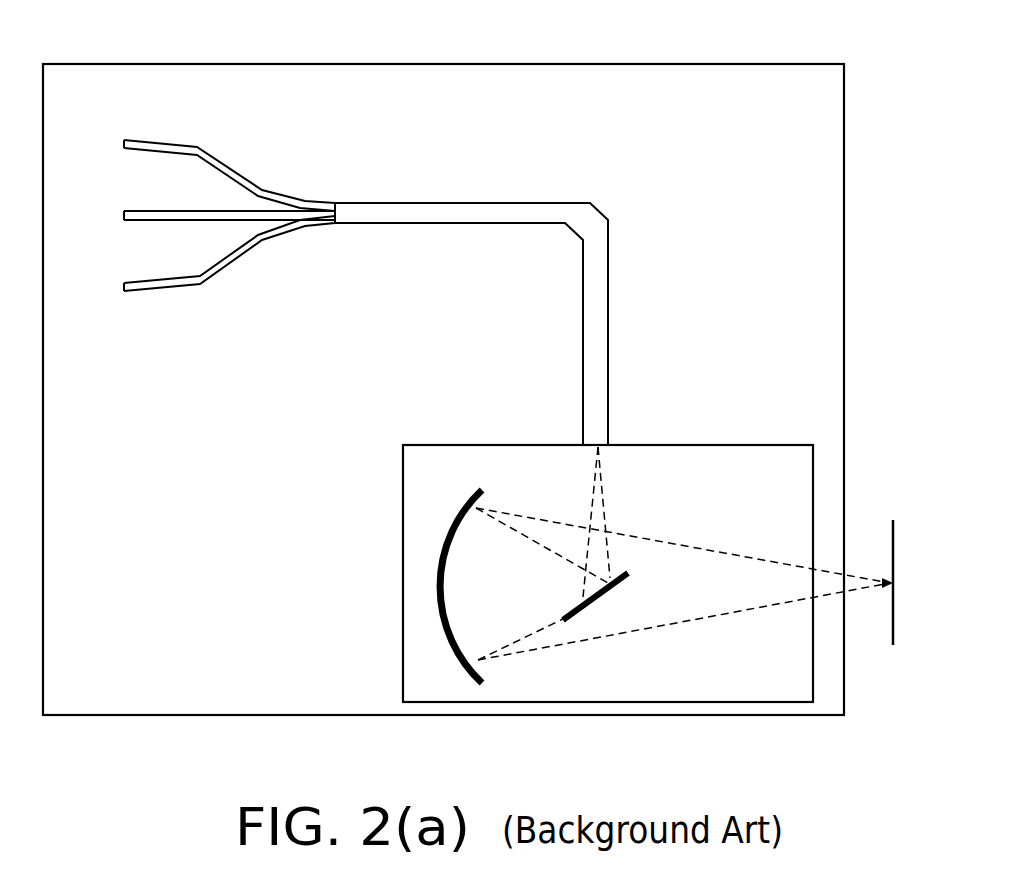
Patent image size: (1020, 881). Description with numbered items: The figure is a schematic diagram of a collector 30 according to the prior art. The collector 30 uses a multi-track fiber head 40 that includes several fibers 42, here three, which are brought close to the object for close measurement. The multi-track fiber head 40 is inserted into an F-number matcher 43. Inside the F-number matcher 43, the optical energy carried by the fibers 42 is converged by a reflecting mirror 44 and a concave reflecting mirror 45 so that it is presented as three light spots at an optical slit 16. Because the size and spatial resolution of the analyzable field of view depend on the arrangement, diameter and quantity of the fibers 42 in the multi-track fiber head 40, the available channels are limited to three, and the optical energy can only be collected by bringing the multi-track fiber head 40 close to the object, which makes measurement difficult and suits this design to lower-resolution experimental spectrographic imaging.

The collector 30 is at (443, 63).
The fibers 42 is at (178, 140).
The multi-track fiber head 40 is at (453, 202).
The F-number matcher 43 is at (710, 444).
The concave reflecting mirror 45 is at (440, 585).
The reflecting mirror 44 is at (597, 598).
The optical slit 16 is at (893, 520).